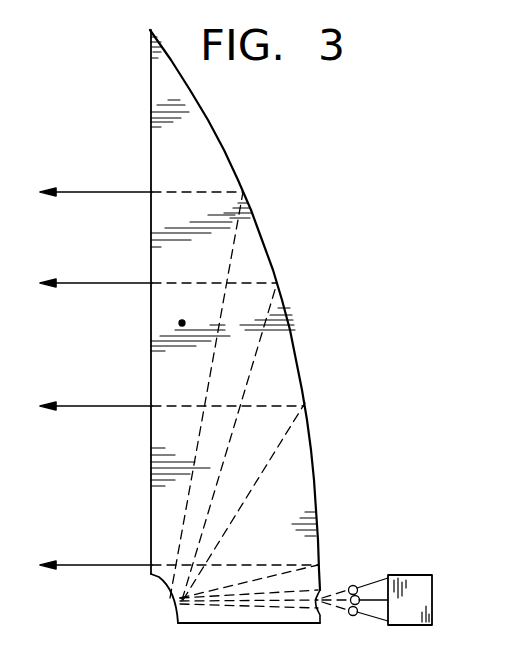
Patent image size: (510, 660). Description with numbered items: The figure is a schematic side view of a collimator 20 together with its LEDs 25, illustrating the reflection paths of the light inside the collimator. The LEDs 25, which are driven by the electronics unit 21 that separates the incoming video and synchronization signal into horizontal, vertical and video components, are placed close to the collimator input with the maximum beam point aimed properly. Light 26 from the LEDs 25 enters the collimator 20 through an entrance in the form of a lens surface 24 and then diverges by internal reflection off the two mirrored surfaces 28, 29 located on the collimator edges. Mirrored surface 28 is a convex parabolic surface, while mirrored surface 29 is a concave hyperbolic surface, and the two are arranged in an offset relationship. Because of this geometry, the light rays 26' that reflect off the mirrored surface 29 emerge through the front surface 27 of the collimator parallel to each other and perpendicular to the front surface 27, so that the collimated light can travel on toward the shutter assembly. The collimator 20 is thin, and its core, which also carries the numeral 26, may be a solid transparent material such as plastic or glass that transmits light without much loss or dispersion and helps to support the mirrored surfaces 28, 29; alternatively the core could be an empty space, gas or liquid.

The collimator 20 is at (225, 326).
The electronics unit 21 is at (405, 578).
The lens surface 24 is at (320, 590).
The LEDs 25 is at (353, 615).
The light 26 is at (223, 490).
The light rays 26' is at (96, 378).
The front surface 27 is at (150, 140).
The mirrored surface 28 is at (165, 582).
The mirrored surface 29 is at (228, 153).